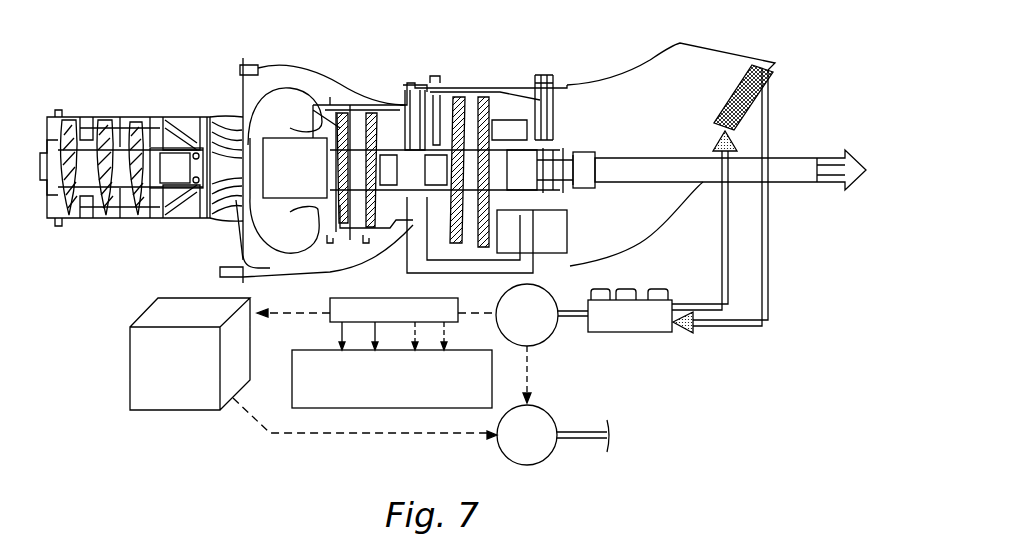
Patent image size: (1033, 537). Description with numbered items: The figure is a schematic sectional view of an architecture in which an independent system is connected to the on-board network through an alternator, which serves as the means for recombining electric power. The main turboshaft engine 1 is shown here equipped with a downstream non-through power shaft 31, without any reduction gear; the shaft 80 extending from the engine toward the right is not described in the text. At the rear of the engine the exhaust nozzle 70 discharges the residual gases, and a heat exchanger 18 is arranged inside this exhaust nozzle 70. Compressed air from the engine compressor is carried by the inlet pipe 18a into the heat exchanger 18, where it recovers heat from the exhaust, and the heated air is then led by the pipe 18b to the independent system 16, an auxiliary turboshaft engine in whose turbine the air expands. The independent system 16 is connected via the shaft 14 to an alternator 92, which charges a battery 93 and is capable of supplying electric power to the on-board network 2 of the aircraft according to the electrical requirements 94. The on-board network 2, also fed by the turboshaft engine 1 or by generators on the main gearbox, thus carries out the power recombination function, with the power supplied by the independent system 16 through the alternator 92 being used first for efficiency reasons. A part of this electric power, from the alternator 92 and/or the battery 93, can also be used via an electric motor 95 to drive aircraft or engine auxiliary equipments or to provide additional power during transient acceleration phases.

The main turboshaft engine 1 is at (468, 62).
The downstream non-through power shaft 31 is at (588, 135).
The exhaust nozzle 70 is at (646, 119).
The output shaft 80 is at (660, 170).
The heat exchanger 18 is at (740, 85).
The inlet pipe 18a is at (722, 270).
The pipe 18b is at (768, 290).
The independent system 16 is at (630, 311).
The shaft 14 is at (575, 318).
The alternator 92 is at (545, 340).
The battery 93 is at (165, 316).
The on-board network 2 is at (368, 312).
The electrical requirements 94 is at (397, 379).
The electric motor 95 is at (537, 447).